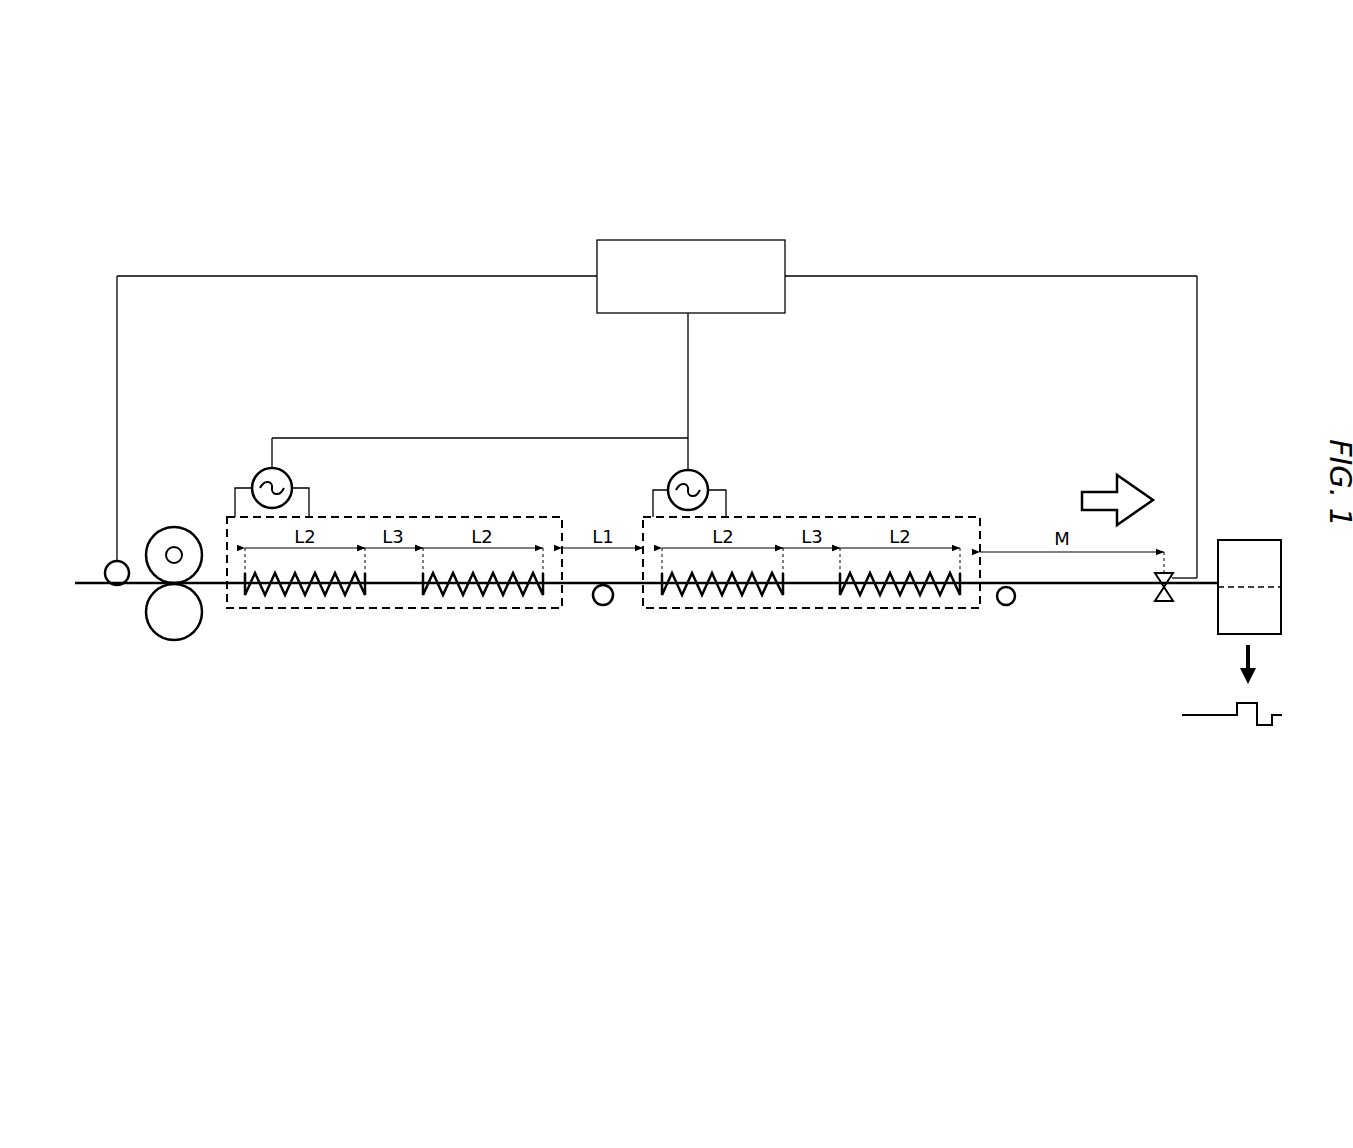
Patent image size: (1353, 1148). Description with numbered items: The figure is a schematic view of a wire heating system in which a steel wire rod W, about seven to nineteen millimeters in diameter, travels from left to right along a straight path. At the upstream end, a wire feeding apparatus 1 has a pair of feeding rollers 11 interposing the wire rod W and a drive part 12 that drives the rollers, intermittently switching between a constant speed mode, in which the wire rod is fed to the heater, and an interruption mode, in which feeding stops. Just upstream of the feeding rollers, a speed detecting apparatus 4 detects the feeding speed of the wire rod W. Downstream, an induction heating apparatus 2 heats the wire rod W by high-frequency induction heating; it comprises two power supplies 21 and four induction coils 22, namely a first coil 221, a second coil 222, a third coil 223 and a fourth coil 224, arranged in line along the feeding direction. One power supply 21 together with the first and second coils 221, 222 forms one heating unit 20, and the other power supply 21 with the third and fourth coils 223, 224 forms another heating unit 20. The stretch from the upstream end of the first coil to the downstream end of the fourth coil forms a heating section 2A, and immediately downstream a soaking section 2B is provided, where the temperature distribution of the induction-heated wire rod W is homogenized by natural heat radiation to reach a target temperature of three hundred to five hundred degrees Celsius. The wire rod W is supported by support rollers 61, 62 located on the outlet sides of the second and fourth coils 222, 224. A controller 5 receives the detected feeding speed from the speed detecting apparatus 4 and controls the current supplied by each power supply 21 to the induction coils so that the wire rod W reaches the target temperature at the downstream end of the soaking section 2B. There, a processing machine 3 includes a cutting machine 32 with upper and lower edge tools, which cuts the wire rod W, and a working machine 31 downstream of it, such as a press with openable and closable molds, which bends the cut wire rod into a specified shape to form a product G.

The wire feeding apparatus 1 is at (163, 468).
The induction heating apparatus 2 is at (806, 418).
The heating section 2A is at (583, 633).
The soaking section 2B is at (1074, 642).
The processing machine 3 is at (1193, 603).
The speed detecting apparatus 4 is at (119, 561).
The controller 5 is at (690, 240).
The feeding rollers 11 is at (175, 527).
The drive part 12 is at (179, 551).
The heating unit 20 is at (446, 498).
The power supply 21 is at (290, 478).
The induction coil 22 is at (400, 634).
The first coil 221 is at (300, 598).
The second coil 222 is at (458, 598).
The third coil 223 is at (732, 598).
The fourth coil 224 is at (912, 598).
The working machine 31 is at (1250, 540).
The cutting machine 32 is at (1160, 603).
The support roller 61 is at (608, 604).
The support roller 62 is at (1012, 604).
The wire rod W is at (133, 585).
The product G is at (1215, 717).